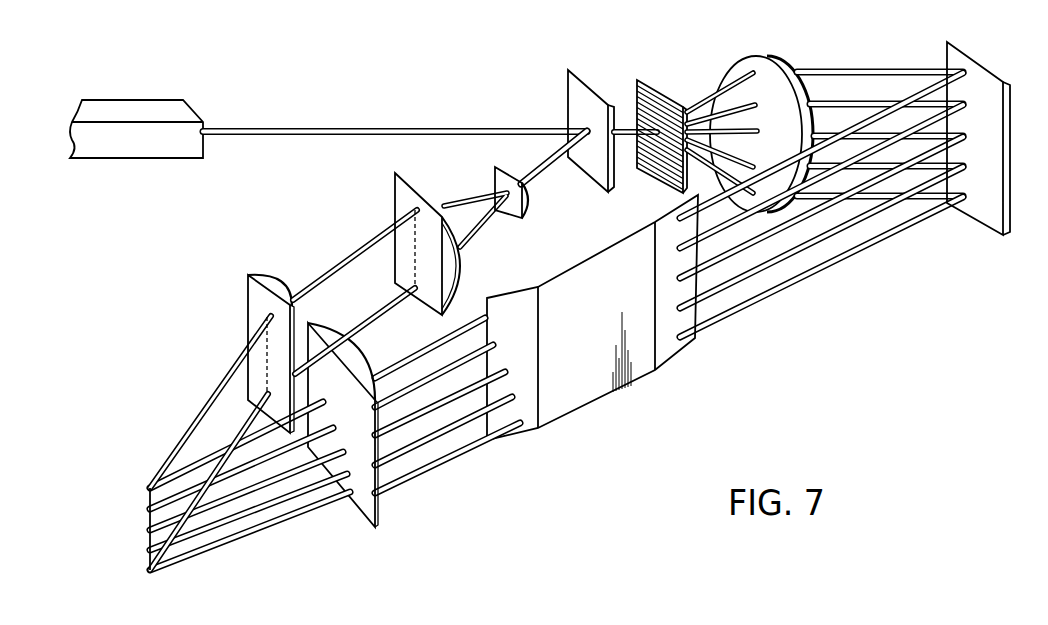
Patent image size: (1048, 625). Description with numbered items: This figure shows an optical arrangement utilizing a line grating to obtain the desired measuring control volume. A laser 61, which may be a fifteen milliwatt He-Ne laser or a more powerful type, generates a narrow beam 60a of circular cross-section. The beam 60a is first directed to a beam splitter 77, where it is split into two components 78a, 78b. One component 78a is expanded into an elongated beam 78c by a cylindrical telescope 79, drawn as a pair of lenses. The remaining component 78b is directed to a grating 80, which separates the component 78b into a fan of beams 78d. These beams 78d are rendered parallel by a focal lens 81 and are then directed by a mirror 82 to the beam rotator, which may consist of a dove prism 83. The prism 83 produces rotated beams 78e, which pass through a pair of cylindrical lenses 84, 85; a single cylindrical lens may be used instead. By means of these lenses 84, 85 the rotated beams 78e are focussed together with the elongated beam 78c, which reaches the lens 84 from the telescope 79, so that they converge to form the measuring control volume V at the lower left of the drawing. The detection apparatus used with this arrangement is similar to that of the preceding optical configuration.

The laser 61 is at (163, 100).
The beam 60a is at (335, 128).
The beam splitter 77 is at (567, 97).
The component 78a is at (543, 171).
The component 78b is at (619, 138).
The cylindrical telescope 79 is at (507, 171).
The grating 80 is at (650, 87).
The beams 78d is at (700, 106).
The focal lens 81 is at (791, 63).
The mirror 82 is at (947, 60).
The dove prism 83 is at (660, 368).
The rotated beams 78e is at (443, 466).
The cylindrical lens 85 is at (370, 365).
The cylindrical lens 84 is at (262, 273).
The elongated beam 78c is at (348, 257).
The measuring control volume V is at (143, 483).